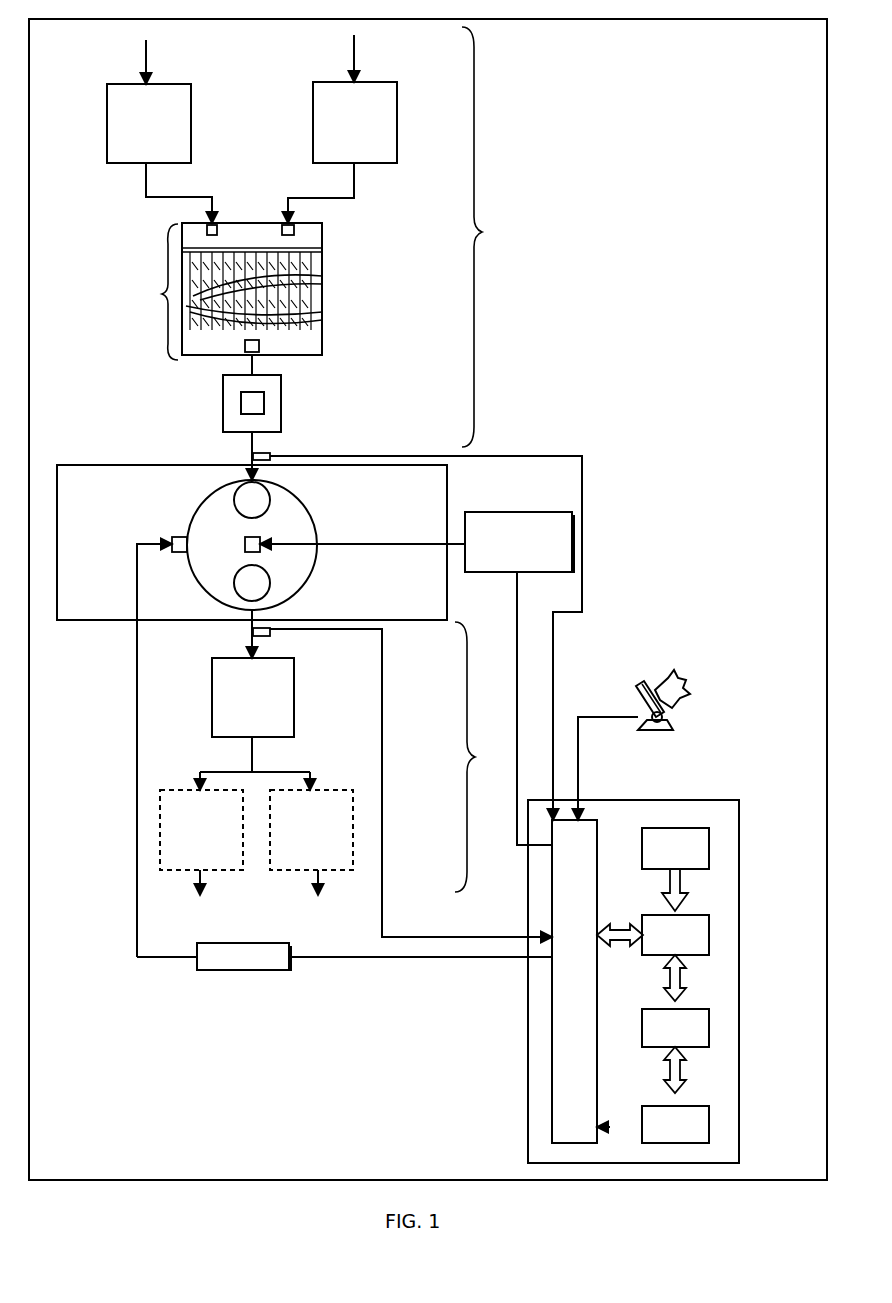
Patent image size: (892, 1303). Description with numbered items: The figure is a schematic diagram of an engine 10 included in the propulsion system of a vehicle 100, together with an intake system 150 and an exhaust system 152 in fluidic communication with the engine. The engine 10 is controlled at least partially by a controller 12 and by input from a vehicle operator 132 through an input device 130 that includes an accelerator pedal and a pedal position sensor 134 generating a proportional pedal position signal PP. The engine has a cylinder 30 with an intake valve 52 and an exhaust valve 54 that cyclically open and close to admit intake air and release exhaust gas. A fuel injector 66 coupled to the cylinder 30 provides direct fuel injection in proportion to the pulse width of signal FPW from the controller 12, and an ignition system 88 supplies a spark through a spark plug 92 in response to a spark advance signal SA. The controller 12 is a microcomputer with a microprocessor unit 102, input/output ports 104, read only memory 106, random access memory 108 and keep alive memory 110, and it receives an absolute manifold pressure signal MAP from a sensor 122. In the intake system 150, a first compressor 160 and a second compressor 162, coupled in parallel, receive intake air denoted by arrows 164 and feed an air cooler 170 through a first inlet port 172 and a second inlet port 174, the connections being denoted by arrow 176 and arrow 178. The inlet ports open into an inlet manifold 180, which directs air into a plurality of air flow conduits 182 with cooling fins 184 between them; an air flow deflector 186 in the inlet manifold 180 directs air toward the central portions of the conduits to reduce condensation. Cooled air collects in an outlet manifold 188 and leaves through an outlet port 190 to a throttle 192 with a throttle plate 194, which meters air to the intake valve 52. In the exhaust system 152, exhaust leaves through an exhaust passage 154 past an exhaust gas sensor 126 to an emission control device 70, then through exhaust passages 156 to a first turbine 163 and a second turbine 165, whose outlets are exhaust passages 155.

The vehicle 100 is at (48, 20).
The engine 10 is at (84, 464).
The controller 12 is at (728, 799).
The cylinder 30 is at (304, 500).
The intake valve 52 is at (270, 500).
The exhaust valve 54 is at (270, 583).
The fuel injector 66 is at (178, 534).
The emission control device 70 is at (294, 698).
The ignition system 88 is at (508, 512).
The spark plug 92 is at (242, 544).
The microprocessor unit 102 is at (709, 930).
The input/output ports 104 is at (598, 828).
The read only memory 106 is at (709, 844).
The random access memory 108 is at (709, 1026).
The keep alive memory 110 is at (709, 1122).
The sensor 122 is at (264, 453).
The exhaust gas sensor 126 is at (268, 636).
The input device 130 is at (636, 690).
The vehicle operator 132 is at (683, 682).
The pedal position sensor 134 is at (668, 720).
The intake system 150 is at (492, 237).
The exhaust system 152 is at (485, 757).
The exhaust passage 154 is at (250, 640).
The exhaust passages 155 is at (204, 880).
The exhaust passages 156 is at (256, 758).
The first compressor 160 is at (138, 84).
The second compressor 162 is at (344, 82).
The first turbine 163 is at (190, 788).
The intake air 164 is at (146, 50).
The second turbine 165 is at (322, 788).
The air cooler 170 is at (162, 290).
The first inlet port 172 is at (217, 230).
The second inlet port 174 is at (294, 228).
The arrow 176 is at (170, 198).
The arrow 178 is at (302, 198).
The inlet manifold 180 is at (322, 236).
The air flow conduits 182 is at (322, 312).
The cooling fins 184 is at (322, 276).
The air flow deflector 186 is at (322, 252).
The outlet manifold 188 is at (322, 344).
The outlet port 190 is at (259, 346).
The throttle 192 is at (281, 398).
The throttle plate 194 is at (241, 404).
The absolute manifold pressure signal MAP is at (340, 455).
The spark advance signal SA is at (517, 610).
The pedal position signal PP is at (580, 775).
The fuel pulse width signal FPW is at (300, 958).